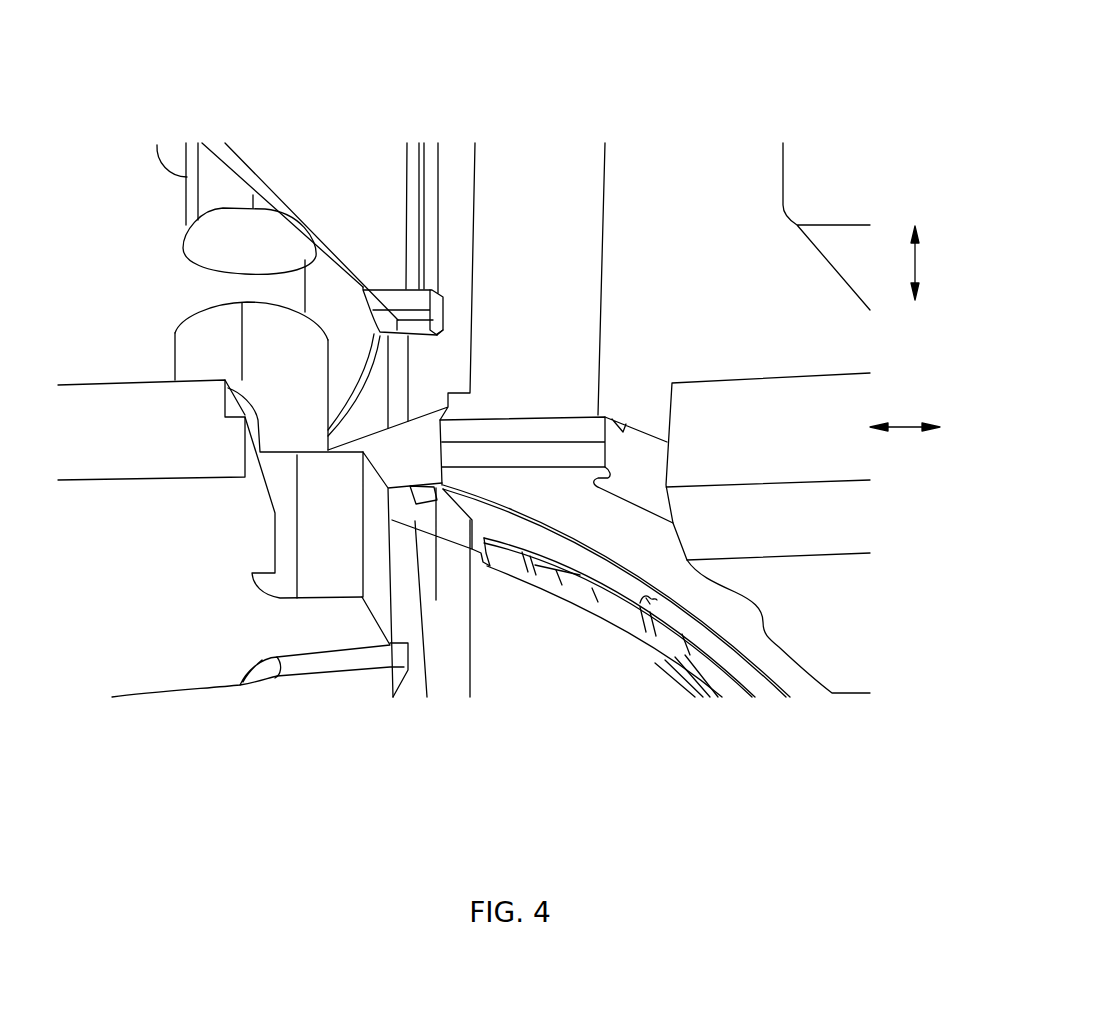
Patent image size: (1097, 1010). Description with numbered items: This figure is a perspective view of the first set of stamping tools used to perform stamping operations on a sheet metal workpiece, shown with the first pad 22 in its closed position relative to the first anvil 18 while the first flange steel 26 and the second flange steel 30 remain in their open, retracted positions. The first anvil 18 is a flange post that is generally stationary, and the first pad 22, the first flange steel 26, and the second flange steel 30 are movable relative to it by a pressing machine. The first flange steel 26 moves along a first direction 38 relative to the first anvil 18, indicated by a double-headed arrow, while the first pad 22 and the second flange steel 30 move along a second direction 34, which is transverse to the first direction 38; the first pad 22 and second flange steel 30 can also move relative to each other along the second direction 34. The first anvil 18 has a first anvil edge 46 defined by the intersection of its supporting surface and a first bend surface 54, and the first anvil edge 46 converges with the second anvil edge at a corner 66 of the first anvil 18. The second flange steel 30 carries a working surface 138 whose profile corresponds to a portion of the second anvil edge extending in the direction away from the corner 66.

The first anvil 18 is at (657, 683).
The first pad 22 is at (718, 190).
The first flange steel 26 is at (823, 640).
The second flange steel 30 is at (324, 193).
The second direction 34 is at (918, 262).
The first direction 38 is at (905, 428).
The first anvil edge 46 is at (582, 607).
The first bend surface 54 is at (647, 598).
The corner 66 is at (436, 600).
The working surface 138 is at (412, 140).